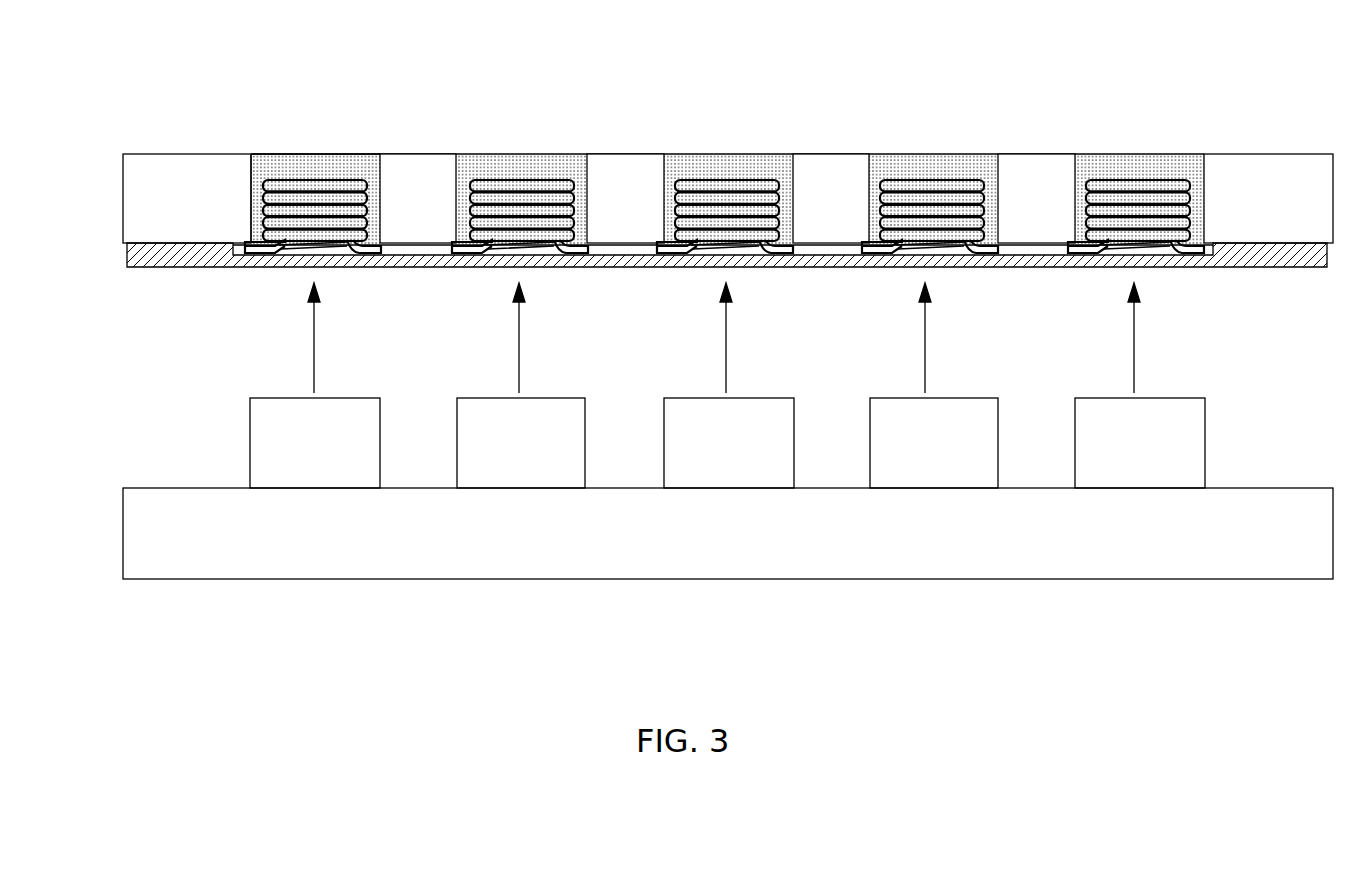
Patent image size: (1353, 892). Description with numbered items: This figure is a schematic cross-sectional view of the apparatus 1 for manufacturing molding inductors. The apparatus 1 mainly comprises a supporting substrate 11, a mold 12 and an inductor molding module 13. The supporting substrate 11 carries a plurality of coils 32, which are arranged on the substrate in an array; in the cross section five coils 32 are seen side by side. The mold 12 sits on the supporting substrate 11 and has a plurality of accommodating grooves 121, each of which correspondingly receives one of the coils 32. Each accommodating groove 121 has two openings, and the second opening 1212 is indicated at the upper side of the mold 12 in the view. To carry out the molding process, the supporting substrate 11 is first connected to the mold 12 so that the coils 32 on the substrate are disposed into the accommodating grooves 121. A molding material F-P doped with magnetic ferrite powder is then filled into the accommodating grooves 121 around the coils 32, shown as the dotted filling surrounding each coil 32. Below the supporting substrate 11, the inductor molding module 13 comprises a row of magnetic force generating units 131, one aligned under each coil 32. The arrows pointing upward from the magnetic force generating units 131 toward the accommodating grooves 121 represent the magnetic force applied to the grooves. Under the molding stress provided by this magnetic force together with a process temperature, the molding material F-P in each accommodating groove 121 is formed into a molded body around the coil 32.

The apparatus for manufacturing molding inductor 1 is at (1255, 86).
The supporting substrate 11 is at (136, 276).
The mold 12 is at (134, 150).
The accommodating groove 121 is at (240, 178).
The second opening 1212 is at (358, 155).
The molding material F-P is at (262, 156).
The coil 32 is at (330, 179).
The inductor molding module 13 is at (196, 588).
The magnetic force generating unit 131 is at (370, 458).